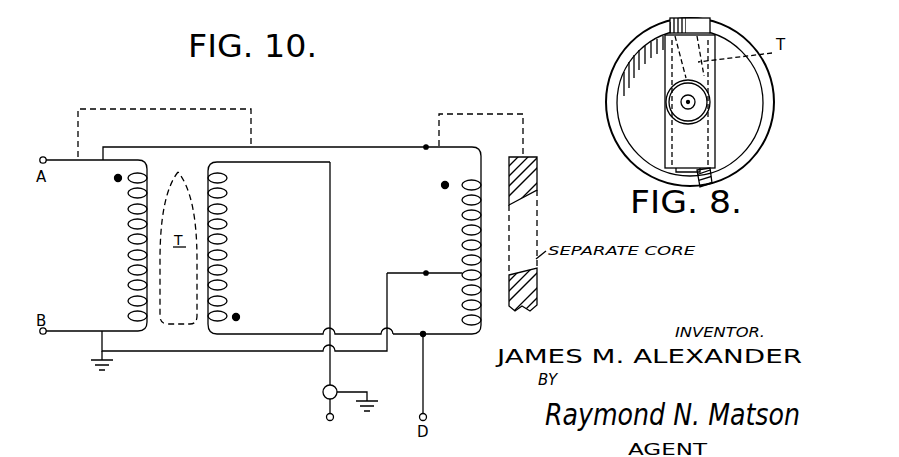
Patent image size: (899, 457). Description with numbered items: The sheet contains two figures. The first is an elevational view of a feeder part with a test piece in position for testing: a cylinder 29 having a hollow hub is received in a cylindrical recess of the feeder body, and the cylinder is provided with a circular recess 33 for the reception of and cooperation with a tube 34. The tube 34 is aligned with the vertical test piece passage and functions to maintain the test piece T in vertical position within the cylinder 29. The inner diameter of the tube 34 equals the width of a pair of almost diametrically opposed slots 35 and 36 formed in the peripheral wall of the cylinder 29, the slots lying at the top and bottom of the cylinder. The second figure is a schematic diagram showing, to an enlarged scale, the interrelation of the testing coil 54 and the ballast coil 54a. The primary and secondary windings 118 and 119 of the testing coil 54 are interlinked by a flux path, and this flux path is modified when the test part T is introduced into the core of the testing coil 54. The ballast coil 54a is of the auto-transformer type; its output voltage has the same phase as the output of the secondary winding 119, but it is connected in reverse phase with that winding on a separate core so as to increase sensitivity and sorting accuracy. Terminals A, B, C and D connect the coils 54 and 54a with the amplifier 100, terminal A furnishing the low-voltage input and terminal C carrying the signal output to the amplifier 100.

In FIG. 10, the testing coil 54 is at (150, 118).
In FIG. 10, the ballast coil 54a is at (431, 204).
In FIG. 10, the primary winding 118 is at (83, 245).
In FIG. 10, the secondary winding 119 is at (300, 248).
In FIG. 10, the amplifier 100 is at (316, 419).
In FIG. 8, the cylinder 29 is at (609, 80).
In FIG. 8, the circular recess 33 is at (757, 95).
In FIG. 8, the tube 34 is at (717, 130).
In FIG. 8, the slot 35 is at (707, 22).
In FIG. 8, the slot 36 is at (733, 168).